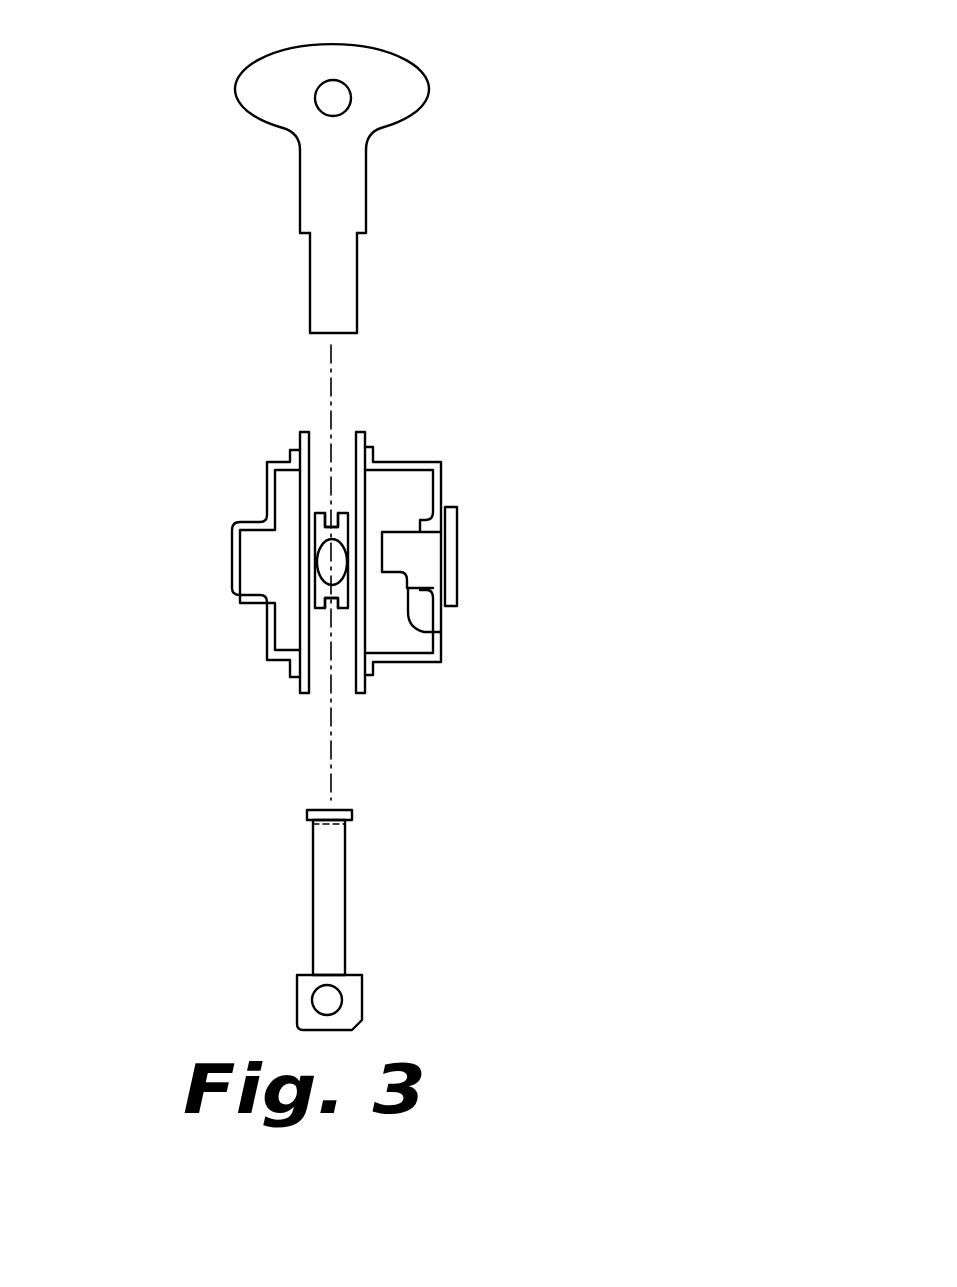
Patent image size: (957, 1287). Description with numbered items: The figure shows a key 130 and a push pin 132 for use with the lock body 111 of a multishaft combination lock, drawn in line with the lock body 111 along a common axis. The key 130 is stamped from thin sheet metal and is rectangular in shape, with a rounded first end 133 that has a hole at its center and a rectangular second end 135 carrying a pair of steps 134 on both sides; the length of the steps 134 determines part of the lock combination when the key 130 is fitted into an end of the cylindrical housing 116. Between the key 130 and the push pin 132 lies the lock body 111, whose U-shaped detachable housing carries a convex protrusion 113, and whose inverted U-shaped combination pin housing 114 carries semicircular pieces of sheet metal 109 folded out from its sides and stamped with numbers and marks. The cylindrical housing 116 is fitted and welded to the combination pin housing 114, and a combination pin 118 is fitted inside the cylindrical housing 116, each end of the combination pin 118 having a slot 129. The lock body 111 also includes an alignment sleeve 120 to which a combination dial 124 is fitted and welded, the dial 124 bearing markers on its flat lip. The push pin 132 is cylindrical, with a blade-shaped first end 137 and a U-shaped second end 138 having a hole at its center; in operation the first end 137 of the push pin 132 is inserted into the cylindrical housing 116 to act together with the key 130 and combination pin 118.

The key 130 is at (317, 178).
The first end 133 is at (408, 60).
The steps 134 is at (301, 234).
The second end 135 is at (346, 336).
The lock body 111 is at (445, 557).
The pieces of sheet metal 109 is at (290, 452).
The convex protrusion 113 is at (232, 556).
The combination pin housing 114 is at (412, 462).
The cylindrical housing 116 is at (366, 578).
The combination pin 118 is at (340, 512).
The slot 129 is at (332, 508).
The alignment sleeve 120 is at (443, 632).
The combination dial 124 is at (458, 575).
The push pin 132 is at (320, 920).
The first end 137 is at (353, 815).
The second end 138 is at (363, 985).